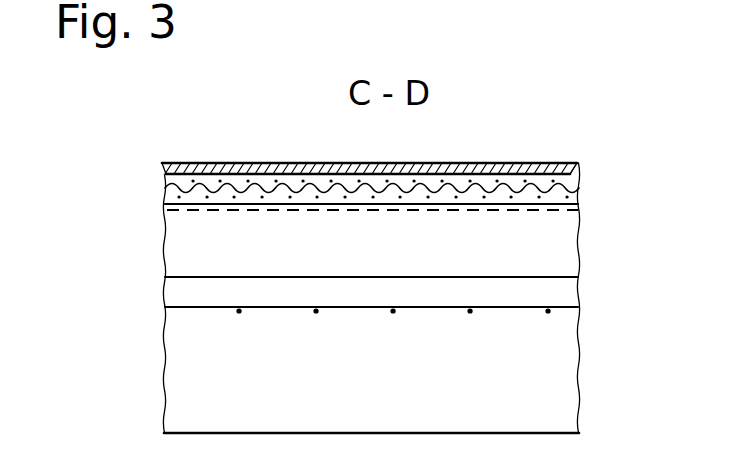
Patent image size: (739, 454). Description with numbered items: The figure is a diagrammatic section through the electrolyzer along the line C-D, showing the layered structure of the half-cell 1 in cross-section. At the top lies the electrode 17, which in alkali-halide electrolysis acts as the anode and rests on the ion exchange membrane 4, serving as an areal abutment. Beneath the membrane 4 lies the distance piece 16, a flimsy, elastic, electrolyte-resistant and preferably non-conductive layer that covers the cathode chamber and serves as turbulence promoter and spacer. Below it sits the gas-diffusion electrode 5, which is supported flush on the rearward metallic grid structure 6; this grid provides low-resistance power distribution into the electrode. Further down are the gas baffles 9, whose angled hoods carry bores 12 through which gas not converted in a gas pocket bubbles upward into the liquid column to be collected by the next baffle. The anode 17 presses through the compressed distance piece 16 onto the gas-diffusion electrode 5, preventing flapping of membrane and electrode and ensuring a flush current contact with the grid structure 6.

The half-cell 1 is at (577, 433).
The ion exchange membrane 4 is at (165, 177).
The gas-diffusion electrode 5 is at (163, 207).
The metallic grid structure 6 is at (558, 209).
The gas baffle 9 is at (560, 278).
The bores 12 is at (555, 309).
The distance piece 16 is at (165, 191).
The electrode (anode) 17 is at (178, 162).